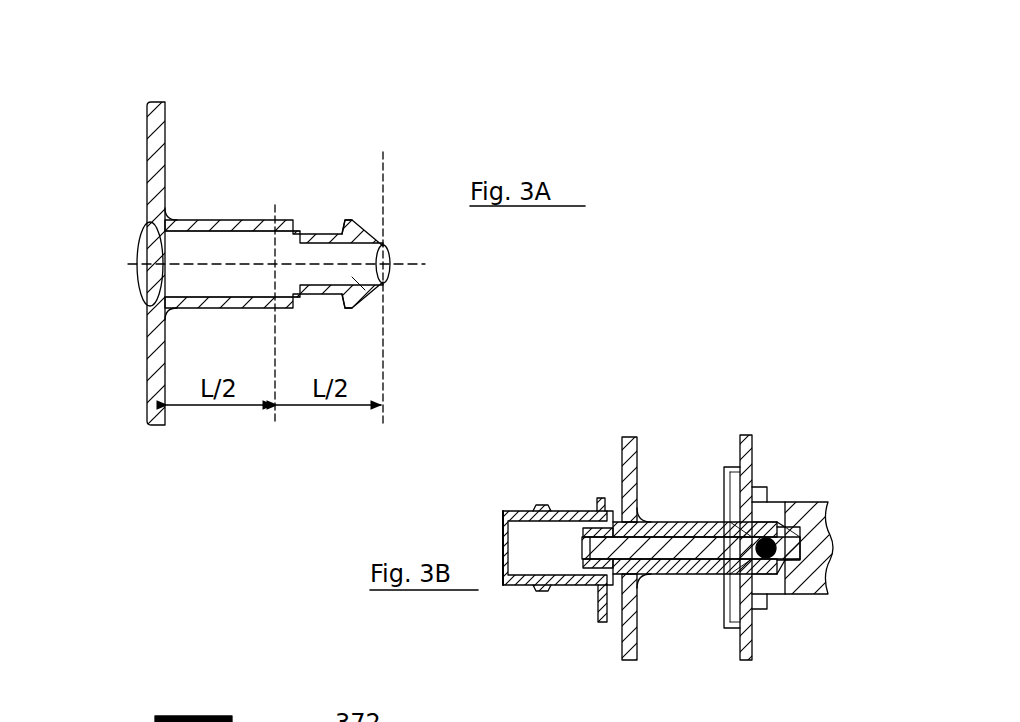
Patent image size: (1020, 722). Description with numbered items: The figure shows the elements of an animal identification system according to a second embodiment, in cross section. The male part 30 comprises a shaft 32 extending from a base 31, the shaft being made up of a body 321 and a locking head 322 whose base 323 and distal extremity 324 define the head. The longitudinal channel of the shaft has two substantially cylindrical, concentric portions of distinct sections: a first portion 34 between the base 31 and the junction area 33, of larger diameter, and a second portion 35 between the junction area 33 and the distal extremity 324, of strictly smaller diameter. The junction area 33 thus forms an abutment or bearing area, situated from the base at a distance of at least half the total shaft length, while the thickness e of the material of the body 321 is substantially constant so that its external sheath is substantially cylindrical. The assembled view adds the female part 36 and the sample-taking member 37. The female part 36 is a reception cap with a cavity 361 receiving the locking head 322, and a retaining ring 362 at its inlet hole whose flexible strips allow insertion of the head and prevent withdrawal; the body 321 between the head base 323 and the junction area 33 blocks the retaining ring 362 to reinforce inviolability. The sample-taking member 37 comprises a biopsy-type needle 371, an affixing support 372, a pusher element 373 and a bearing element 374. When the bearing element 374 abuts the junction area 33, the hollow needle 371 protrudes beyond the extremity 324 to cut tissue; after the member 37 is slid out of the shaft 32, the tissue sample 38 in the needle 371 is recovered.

In FIG. 3A, the male part 30 is at (355, 82).
In FIG. 3B, the male part 30 is at (652, 478).
In FIG. 3A, the base 31 is at (160, 427).
In FIG. 3A, the shaft 32 is at (388, 97).
In FIG. 3A, the body 321 is at (343, 149).
In FIG. 3A, the head 322 is at (383, 149).
In FIG. 3A, the base of the head 323 is at (343, 225).
In FIG. 3A, the distal extremity of the head 324 is at (392, 258).
In FIG. 3A, the junction area 33 is at (277, 292).
In FIG. 3A, the first portion 34 is at (218, 283).
In FIG. 3A, the second portion 35 is at (350, 277).
In FIG. 3B, the female part 36 is at (813, 495).
In FIG. 3B, the cavity 361 is at (783, 503).
In FIG. 3B, the retaining ring 362 is at (727, 500).
In FIG. 3B, the sample-taking member 37 is at (513, 500).
In FIG. 3B, the needle 371 is at (807, 583).
In FIG. 3B, the affixing support 372 is at (567, 593).
In FIG. 3B, the pusher element 373 is at (667, 578).
In FIG. 3B, the bearing element 374 is at (706, 584).
In FIG. 3B, the tissue sample 38 is at (773, 593).